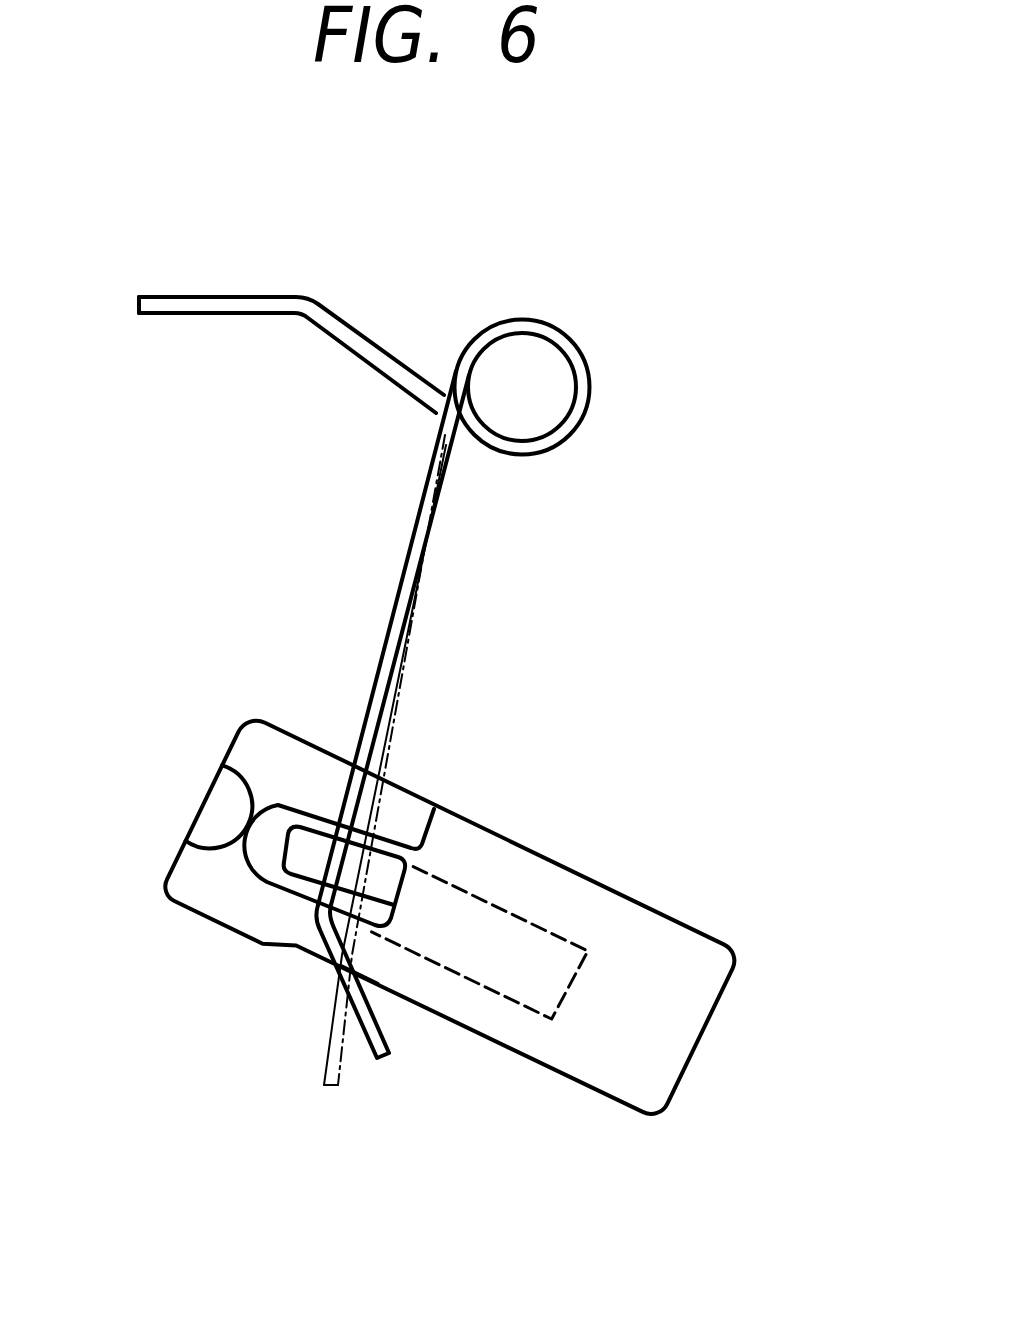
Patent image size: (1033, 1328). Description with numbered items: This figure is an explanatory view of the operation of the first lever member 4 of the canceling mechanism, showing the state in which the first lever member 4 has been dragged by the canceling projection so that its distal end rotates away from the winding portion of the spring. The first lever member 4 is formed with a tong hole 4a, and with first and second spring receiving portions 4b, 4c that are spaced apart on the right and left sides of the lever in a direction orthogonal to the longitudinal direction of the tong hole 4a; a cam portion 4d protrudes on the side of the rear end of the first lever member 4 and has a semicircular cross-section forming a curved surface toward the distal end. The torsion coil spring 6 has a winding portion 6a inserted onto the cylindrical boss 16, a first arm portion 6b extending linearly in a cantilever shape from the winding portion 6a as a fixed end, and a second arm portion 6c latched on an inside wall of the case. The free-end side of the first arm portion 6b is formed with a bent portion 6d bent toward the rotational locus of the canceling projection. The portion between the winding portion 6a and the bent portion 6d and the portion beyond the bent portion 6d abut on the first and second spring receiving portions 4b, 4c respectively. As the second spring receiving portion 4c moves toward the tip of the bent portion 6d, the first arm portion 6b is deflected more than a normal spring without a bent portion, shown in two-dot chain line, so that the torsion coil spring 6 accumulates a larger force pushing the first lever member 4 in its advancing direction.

The first lever member 4 is at (693, 932).
The tong hole 4a is at (280, 820).
The first spring receiving portion 4b is at (437, 824).
The second spring receiving portion 4c is at (360, 975).
The cam portion 4d is at (217, 822).
The torsion coil spring 6 is at (384, 330).
The winding portion 6a is at (542, 322).
The first arm portion 6b is at (409, 553).
The second arm portion 6c is at (217, 293).
The bent portion 6d is at (355, 1052).
The boss 16 is at (546, 382).